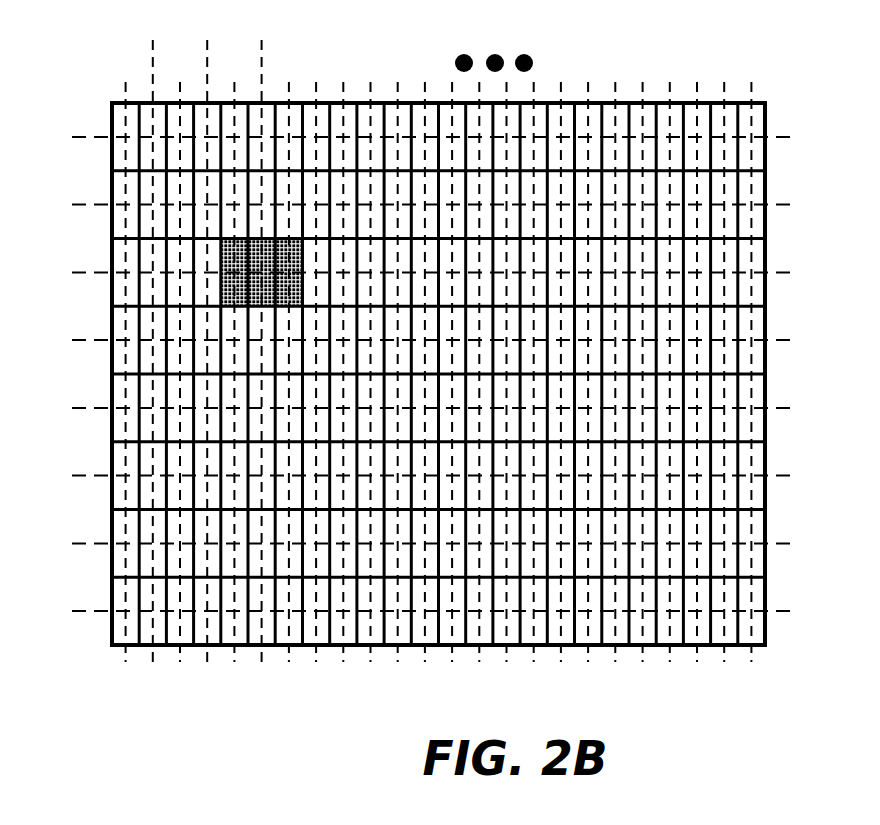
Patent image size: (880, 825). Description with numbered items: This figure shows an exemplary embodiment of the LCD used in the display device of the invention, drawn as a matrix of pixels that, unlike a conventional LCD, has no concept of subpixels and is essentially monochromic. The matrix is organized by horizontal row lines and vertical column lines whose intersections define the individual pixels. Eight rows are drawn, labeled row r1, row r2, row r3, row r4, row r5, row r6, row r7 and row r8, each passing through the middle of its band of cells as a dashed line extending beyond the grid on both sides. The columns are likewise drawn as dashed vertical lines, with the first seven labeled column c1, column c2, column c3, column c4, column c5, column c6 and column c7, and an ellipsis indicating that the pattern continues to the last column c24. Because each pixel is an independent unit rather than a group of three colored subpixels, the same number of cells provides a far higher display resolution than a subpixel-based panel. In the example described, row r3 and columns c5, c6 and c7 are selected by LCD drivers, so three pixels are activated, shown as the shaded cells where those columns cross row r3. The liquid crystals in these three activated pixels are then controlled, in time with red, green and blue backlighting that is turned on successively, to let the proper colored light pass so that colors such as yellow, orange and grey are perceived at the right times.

The column c1 is at (123, 356).
The column c2 is at (158, 337).
The column c3 is at (182, 356).
The column c4 is at (209, 337).
The column c5 is at (236, 356).
The column c6 is at (269, 337).
The column c7 is at (293, 356).
The column c24 is at (755, 358).
The row r1 is at (411, 140).
The row r2 is at (411, 208).
The row r3 is at (411, 275).
The row r4 is at (411, 343).
The row r5 is at (411, 411).
The row r6 is at (411, 479).
The row r7 is at (411, 546).
The row r8 is at (411, 614).